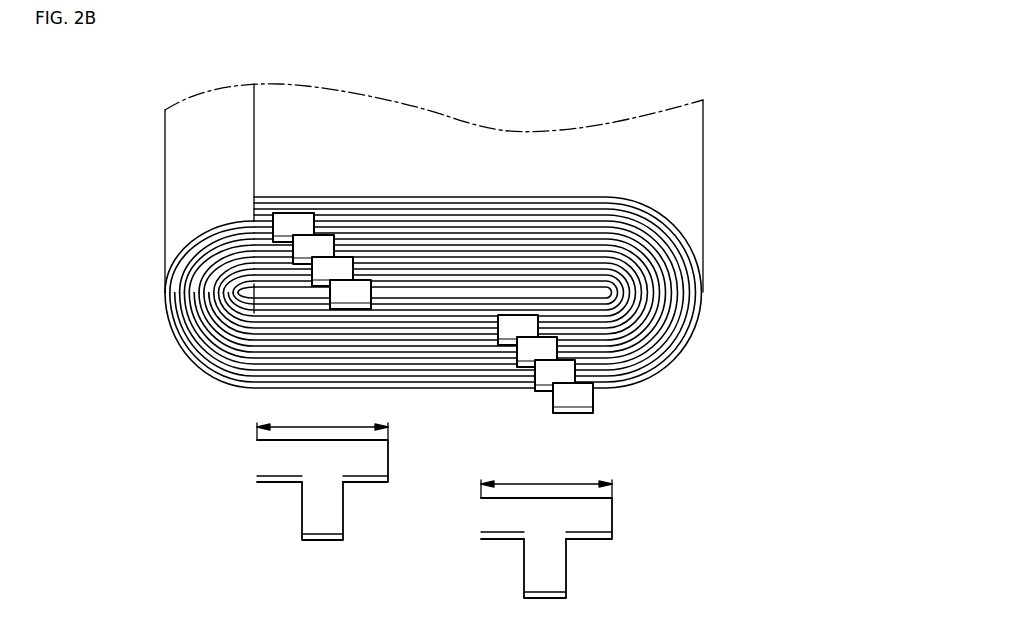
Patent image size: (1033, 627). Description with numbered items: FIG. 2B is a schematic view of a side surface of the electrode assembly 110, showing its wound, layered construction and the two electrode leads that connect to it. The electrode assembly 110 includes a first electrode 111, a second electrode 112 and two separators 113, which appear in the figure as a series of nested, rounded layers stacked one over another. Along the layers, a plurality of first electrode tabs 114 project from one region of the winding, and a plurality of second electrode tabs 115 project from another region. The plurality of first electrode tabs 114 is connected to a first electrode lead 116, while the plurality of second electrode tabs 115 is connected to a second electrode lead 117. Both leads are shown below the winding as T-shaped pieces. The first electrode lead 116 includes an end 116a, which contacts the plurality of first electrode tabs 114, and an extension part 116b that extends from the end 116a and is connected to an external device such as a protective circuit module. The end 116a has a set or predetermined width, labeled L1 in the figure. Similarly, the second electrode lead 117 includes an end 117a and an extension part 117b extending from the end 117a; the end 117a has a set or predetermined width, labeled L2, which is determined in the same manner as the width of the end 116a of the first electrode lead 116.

The electrode assembly 110 is at (101, 66).
The first electrode 111 is at (682, 228).
The second electrode 112 is at (684, 292).
The separators 113 is at (688, 259).
The first electrode tabs 114 is at (336, 296).
The second electrode tabs 115 is at (587, 397).
The first electrode lead 116 is at (165, 473).
The end 116a is at (272, 456).
The extension part 116b is at (305, 522).
The second electrode lead 117 is at (702, 522).
The end 117a is at (597, 513).
The extension part 117b is at (562, 578).